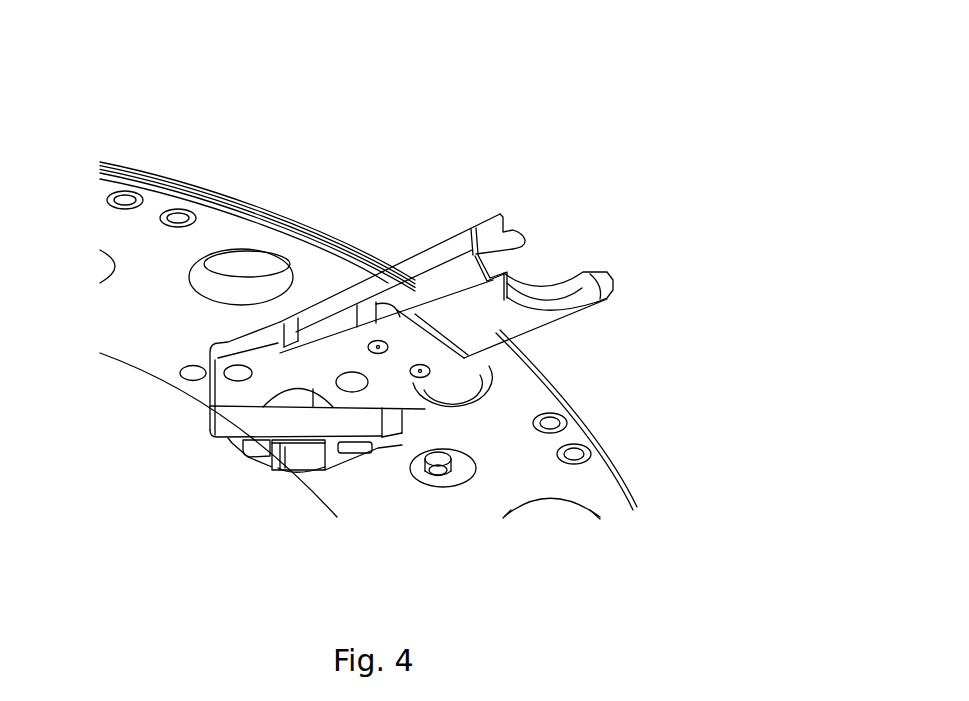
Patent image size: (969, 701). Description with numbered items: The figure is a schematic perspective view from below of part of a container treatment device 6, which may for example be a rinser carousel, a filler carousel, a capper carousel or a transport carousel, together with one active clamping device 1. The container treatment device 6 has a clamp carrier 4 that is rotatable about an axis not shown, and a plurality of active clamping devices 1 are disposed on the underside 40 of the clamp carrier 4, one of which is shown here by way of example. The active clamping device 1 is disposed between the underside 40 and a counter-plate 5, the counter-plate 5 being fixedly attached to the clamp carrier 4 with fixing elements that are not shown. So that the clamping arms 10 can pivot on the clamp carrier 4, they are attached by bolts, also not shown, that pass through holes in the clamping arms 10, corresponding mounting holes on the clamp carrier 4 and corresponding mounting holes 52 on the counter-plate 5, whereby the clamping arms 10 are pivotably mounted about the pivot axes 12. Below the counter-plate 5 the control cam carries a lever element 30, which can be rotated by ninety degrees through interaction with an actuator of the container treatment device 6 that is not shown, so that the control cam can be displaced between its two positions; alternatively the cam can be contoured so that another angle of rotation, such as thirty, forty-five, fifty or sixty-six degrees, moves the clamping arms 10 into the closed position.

The active clamping device 1 is at (518, 191).
The clamp carrier 4 is at (238, 196).
The counter-plate 5 is at (257, 390).
The container treatment device 6 is at (663, 100).
The clamping arms 10 is at (500, 245).
The pivot axes 12 is at (379, 353).
The lever element 30 is at (257, 424).
The underside 40 is at (296, 244).
The mounting holes 52 is at (380, 347).